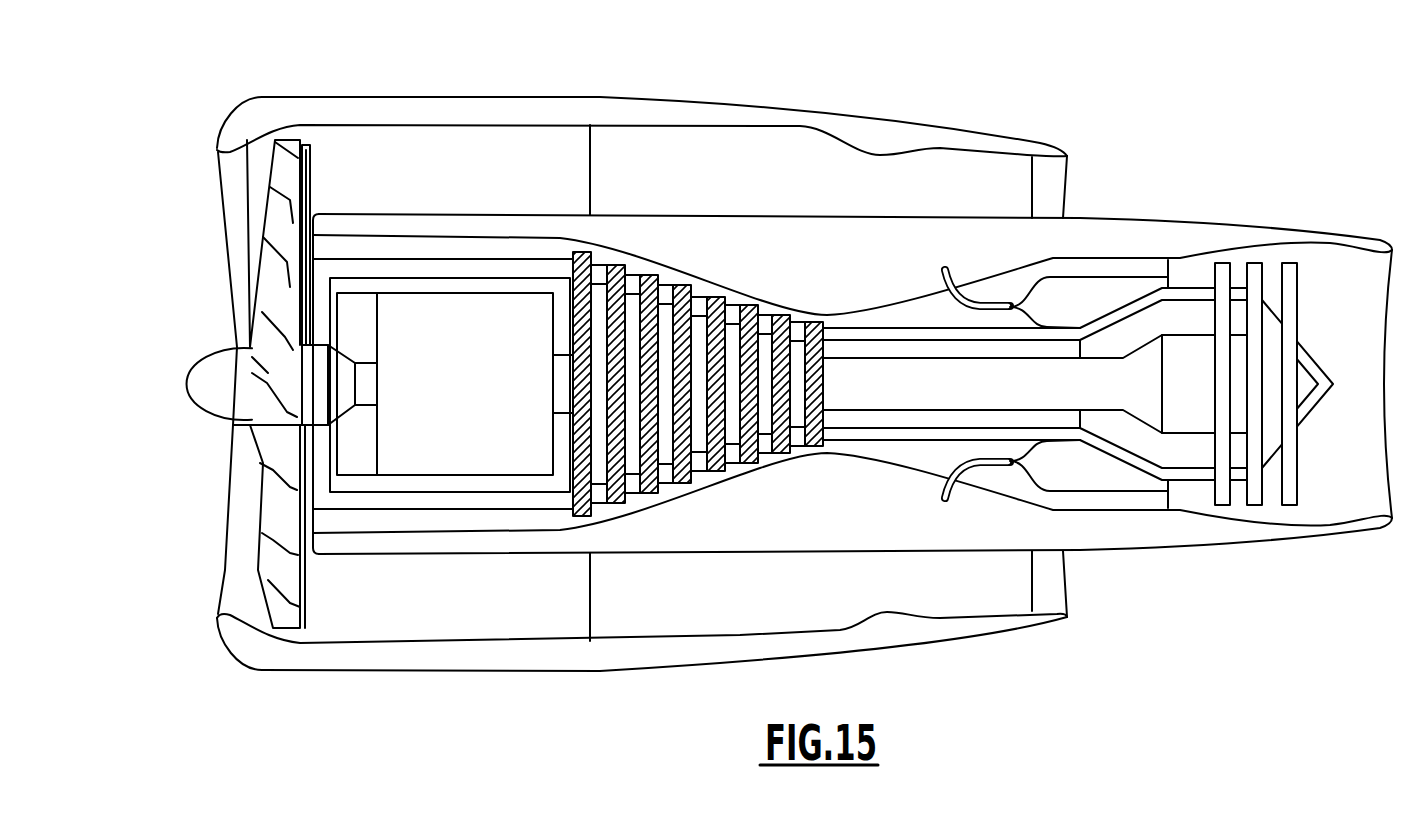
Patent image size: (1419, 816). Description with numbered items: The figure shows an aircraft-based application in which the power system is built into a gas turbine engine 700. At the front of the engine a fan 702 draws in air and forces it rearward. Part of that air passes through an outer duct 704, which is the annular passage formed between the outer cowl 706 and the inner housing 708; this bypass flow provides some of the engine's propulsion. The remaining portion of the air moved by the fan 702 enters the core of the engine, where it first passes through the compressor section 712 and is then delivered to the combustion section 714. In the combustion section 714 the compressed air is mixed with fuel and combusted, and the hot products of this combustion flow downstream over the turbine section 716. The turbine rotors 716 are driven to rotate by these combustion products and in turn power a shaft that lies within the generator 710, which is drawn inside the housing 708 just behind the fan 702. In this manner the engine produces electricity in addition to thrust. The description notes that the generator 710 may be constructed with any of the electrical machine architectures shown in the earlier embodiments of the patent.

The gas turbine engine 700 is at (743, 379).
The fan 702 is at (245, 282).
The outer duct 704 is at (463, 180).
The cowl 706 is at (600, 108).
The housing 708 is at (628, 237).
The generator 710 is at (433, 447).
The compressor section 712 is at (615, 497).
The combustion section 714 is at (1032, 483).
The turbine section 716 is at (1268, 512).